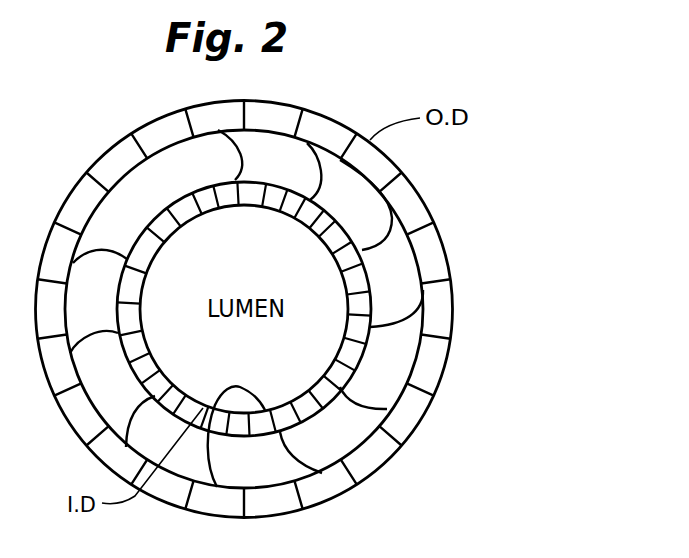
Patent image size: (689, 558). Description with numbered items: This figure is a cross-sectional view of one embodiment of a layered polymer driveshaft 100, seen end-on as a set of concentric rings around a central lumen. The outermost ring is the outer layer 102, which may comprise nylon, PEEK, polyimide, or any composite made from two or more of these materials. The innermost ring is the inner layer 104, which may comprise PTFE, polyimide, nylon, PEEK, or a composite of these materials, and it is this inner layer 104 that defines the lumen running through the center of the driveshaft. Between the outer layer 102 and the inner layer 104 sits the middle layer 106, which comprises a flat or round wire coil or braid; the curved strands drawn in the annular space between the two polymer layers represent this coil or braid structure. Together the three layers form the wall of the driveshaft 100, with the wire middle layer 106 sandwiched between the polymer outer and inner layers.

The layered polymer driveshaft 100 is at (355, 85).
The outer layer 102 is at (433, 253).
The inner layer 104 is at (327, 400).
The middle layer 106 is at (393, 353).